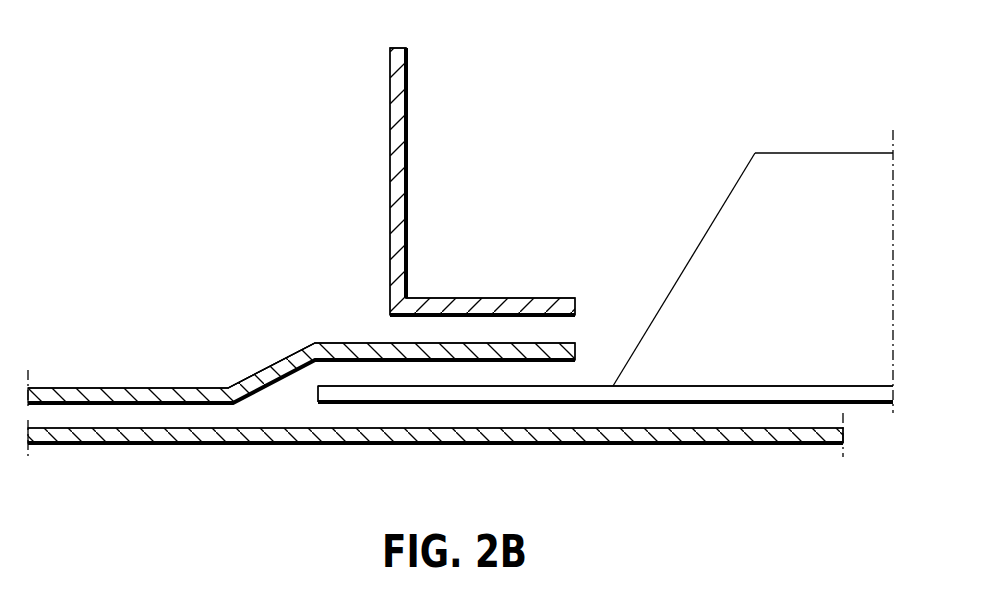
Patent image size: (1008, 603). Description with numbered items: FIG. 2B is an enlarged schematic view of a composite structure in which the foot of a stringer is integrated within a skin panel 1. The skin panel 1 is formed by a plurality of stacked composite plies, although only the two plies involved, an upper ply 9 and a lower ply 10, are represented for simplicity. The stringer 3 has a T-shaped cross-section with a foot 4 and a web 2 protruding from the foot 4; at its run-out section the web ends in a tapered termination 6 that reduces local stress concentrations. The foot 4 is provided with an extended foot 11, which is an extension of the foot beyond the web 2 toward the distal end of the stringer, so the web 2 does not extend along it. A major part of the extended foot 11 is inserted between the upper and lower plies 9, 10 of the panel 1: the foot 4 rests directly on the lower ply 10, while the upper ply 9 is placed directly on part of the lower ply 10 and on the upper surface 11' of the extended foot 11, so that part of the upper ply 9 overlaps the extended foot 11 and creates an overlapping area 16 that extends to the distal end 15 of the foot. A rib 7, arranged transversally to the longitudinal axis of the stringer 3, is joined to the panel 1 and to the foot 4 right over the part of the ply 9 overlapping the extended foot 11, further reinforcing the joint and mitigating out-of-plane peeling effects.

The skin panel 1 is at (138, 457).
The web 2 is at (765, 152).
The stringer 3 is at (823, 210).
The foot 4 is at (726, 393).
The tapered termination 6 is at (702, 240).
The rib 7 is at (398, 120).
The upper ply 9 is at (87, 395).
The lower ply 10 is at (85, 433).
The extended foot 11 is at (605, 450).
The upper surface of the foot 11' is at (473, 280).
The distal end of the foot 15 is at (315, 397).
The overlapping area 16 is at (363, 342).